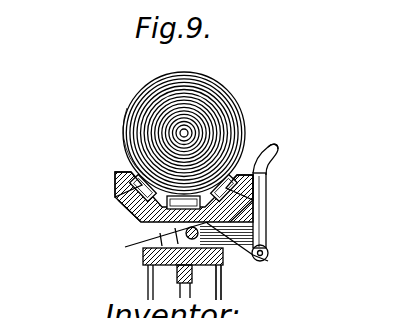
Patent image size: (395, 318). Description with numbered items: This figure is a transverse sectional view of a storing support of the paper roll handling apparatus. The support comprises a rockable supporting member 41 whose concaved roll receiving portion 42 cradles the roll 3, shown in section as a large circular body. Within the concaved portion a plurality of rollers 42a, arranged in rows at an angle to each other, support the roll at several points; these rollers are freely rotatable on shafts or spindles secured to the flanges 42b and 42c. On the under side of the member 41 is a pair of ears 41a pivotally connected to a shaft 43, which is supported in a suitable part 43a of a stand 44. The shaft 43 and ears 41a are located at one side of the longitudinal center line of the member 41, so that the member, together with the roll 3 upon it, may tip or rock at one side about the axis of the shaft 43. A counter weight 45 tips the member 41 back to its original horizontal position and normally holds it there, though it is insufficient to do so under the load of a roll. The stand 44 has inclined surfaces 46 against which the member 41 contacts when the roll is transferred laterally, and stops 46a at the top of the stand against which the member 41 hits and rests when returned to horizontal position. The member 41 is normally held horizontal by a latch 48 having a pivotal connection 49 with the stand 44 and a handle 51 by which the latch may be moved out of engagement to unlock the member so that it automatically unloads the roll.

The roll 3 is at (134, 116).
The roll receiving portion 42 is at (148, 146).
The rollers 42a is at (129, 160).
The flange 42b is at (115, 179).
The flange 42c is at (140, 216).
The rockable supporting member 41 is at (134, 223).
The ears 41a is at (185, 226).
The inclined surfaces 46 is at (158, 238).
The shaft 43 is at (163, 247).
The part of stand 43a is at (151, 270).
The stand 44 is at (203, 288).
The counter weight 45 is at (267, 202).
The latch 48 is at (268, 173).
The handle 51 is at (276, 150).
The pivotal connection 49 is at (268, 253).
The stops 46a is at (265, 261).